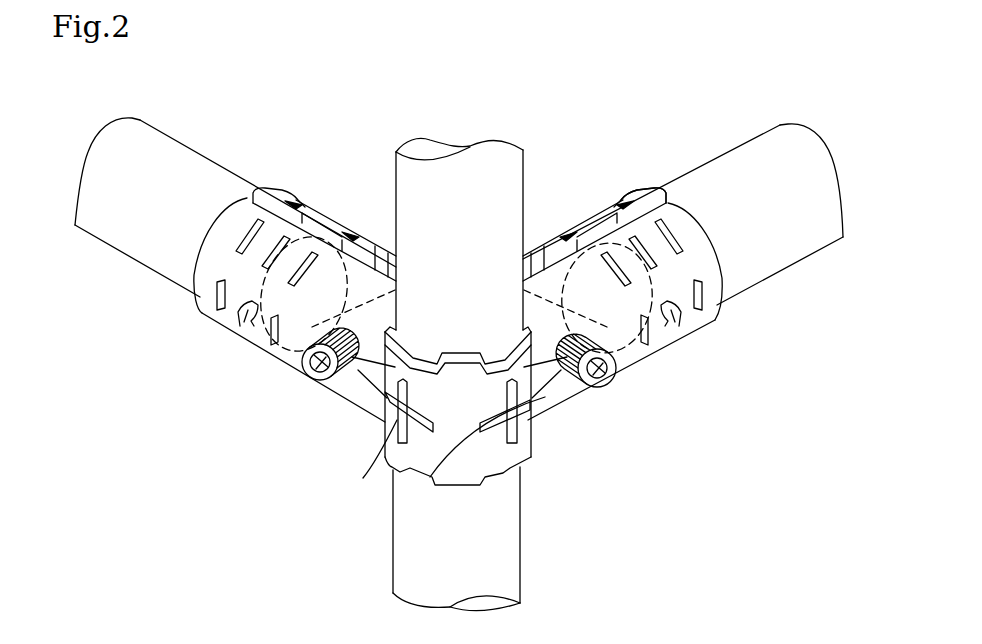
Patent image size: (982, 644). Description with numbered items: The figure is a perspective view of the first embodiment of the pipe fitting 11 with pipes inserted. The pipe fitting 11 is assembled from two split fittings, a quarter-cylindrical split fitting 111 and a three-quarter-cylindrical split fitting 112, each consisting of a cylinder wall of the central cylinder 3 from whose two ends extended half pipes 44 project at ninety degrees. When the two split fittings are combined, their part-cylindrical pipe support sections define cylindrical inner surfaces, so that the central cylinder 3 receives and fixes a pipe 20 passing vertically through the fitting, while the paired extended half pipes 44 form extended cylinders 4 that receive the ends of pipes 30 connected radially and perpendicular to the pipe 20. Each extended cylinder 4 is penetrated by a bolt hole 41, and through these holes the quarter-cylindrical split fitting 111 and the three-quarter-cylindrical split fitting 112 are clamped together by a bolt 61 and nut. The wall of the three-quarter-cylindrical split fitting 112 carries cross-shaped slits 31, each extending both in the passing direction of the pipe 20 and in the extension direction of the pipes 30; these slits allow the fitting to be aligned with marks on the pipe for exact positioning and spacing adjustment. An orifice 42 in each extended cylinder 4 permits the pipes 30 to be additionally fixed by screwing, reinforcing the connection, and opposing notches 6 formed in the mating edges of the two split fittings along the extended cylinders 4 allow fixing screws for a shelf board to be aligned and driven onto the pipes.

The central cylinder 3 is at (446, 423).
The extended cylinder 4 is at (212, 346).
The notch 6 is at (290, 215).
The pipe fitting 11 is at (614, 498).
The pipe 20 is at (507, 553).
The pipe 30 is at (187, 160).
The cross-shaped slit 31 is at (372, 476).
The bolt hole 41 is at (388, 400).
The orifice 42 is at (242, 327).
The extended half pipe 44 is at (340, 227).
The bolt 61 is at (607, 380).
The ¼-cylindrical split fitting 111 is at (666, 180).
The ¾-cylindrical split fitting 112 is at (733, 213).